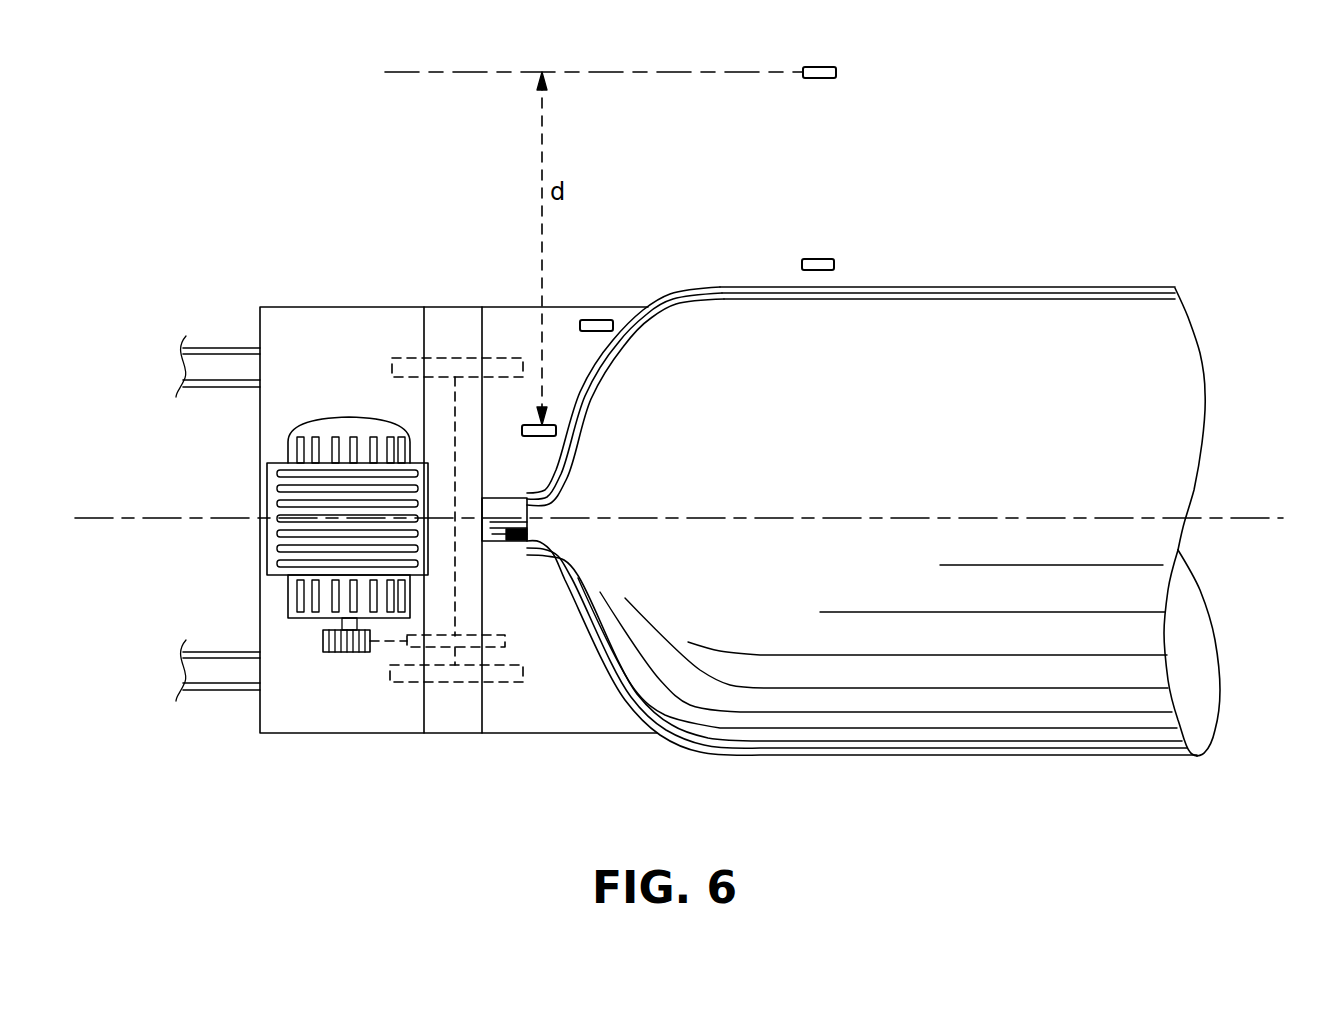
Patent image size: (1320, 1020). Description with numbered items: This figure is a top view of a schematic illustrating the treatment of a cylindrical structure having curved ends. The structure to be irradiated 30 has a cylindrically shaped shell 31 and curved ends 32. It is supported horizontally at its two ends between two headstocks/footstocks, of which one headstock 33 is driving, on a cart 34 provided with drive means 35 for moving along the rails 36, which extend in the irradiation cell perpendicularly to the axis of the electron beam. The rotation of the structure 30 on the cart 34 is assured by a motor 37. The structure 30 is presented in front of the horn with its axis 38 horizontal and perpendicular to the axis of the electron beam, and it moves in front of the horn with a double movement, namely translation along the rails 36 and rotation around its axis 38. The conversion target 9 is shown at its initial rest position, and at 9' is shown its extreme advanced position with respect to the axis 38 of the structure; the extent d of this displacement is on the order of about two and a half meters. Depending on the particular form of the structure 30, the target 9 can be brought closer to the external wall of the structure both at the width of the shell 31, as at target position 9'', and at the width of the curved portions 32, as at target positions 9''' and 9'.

The conversion target 9 is at (641, 50).
The target in extreme advanced position 9' is at (568, 464).
The target position at shell width 9'' is at (850, 232).
The target position at curved portion width 9''' is at (610, 286).
The structure to be irradiated 30 is at (895, 757).
The cylindrically shaped shell 31 is at (1027, 288).
The curved ends 32 is at (590, 387).
The driving headstock 33 is at (508, 545).
The cart 34 is at (337, 307).
The drive means 35 is at (348, 427).
The rails 36 is at (218, 366).
The motor 37 is at (285, 543).
The axis of the structure 38 is at (1265, 522).